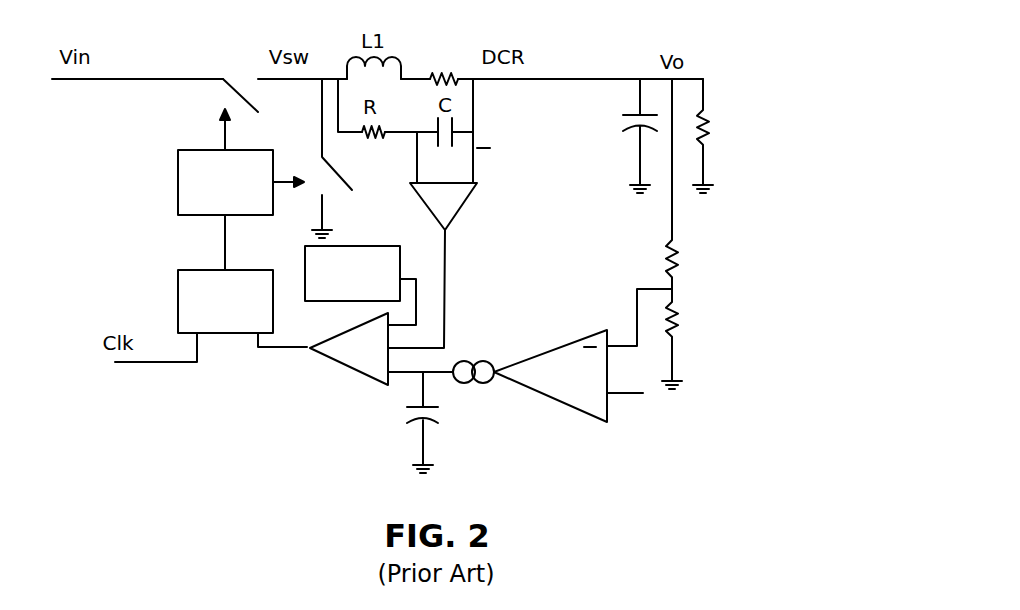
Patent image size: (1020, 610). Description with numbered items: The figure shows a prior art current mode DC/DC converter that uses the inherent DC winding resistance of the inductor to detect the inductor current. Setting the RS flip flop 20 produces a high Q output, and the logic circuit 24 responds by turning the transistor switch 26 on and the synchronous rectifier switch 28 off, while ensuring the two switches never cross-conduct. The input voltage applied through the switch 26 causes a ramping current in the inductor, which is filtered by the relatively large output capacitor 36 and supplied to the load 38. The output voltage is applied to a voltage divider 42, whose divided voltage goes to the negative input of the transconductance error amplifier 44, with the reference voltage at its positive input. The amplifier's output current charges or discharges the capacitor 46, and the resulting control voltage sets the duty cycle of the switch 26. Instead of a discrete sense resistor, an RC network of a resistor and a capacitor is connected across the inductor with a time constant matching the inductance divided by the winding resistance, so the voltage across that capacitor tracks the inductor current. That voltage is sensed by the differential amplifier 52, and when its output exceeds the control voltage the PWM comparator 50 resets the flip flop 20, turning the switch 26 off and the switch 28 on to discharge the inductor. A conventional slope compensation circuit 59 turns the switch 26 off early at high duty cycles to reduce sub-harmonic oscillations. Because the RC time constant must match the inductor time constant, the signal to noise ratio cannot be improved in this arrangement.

The transistor switch 26 is at (232, 77).
The synchronous rectifier switch 28 is at (348, 178).
The logic circuit 24 is at (208, 215).
The RS flip flop 20 is at (227, 333).
The pulse width modulation (PWM) comparator 50 is at (352, 363).
The slope compensation circuit 59 is at (352, 246).
The differential amplifier 52 is at (466, 193).
The output capacitor 36 is at (618, 118).
The load 38 is at (707, 118).
The voltage divider 42 is at (648, 258).
The transconductance error amplifier 44 is at (532, 356).
The capacitor 46 is at (400, 412).